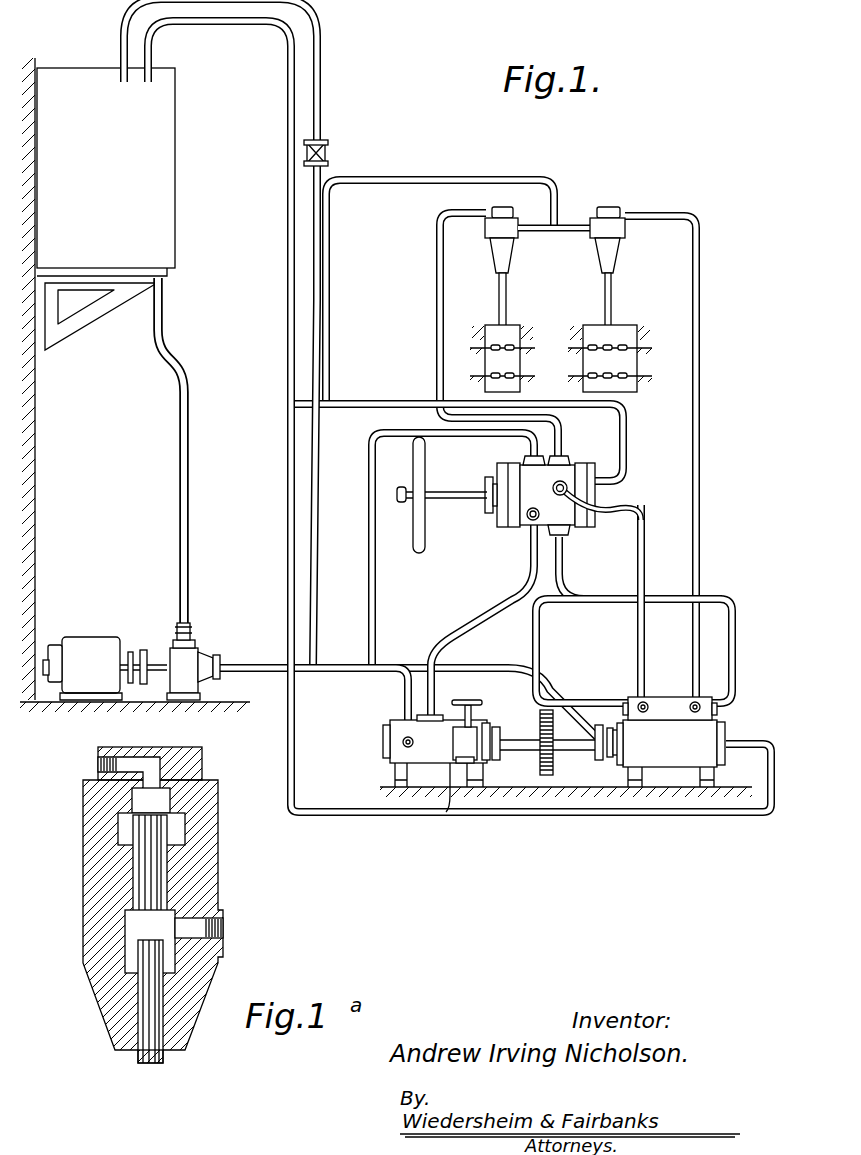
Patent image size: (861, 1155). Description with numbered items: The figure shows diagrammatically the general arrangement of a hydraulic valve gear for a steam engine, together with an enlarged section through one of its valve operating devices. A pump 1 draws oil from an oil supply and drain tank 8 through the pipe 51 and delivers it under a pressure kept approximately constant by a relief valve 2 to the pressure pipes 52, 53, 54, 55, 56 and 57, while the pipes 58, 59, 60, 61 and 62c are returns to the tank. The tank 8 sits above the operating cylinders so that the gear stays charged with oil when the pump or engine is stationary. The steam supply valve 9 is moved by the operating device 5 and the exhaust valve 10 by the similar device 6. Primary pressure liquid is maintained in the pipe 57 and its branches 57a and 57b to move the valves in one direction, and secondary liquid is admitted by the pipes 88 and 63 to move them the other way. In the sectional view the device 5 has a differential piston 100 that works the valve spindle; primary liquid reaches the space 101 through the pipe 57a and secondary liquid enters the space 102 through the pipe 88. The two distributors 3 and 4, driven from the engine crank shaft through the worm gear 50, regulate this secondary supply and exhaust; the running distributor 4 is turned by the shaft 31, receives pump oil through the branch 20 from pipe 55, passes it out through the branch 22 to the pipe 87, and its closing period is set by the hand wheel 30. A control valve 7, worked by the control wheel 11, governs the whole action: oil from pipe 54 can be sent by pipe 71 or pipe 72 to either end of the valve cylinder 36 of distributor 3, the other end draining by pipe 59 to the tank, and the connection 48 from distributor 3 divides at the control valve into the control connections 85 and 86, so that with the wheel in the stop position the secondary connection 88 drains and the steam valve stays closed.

In FIG. 1, the pump 1 is at (193, 661).
In FIG. 1, the relief valve 2 is at (328, 149).
In FIG. 1, the distributor 3 is at (660, 742).
In FIG. 1, the running distributor 4 is at (441, 753).
In FIG. 1, the valve operating device 5 is at (498, 254).
In FIG. 1A, the valve operating device 5 is at (140, 898).
In FIG. 1, the valve operating device 6 is at (612, 256).
In FIG. 1, the control valve 7 is at (540, 495).
In FIG. 1, the oil supply and drain tank 8 is at (98, 379).
In FIG. 1, the steam supply valve 9 is at (493, 360).
In FIG. 1, the exhaust valve 10 is at (628, 360).
In FIG. 1, the control wheel 11 is at (424, 467).
In FIG. 1, the branch 20 is at (400, 742).
In FIG. 1, the branch 22 is at (432, 716).
In FIG. 1, the hand wheel 30 is at (474, 705).
In FIG. 1, the shaft 31 is at (588, 746).
In FIG. 1, the valve cylinder 36 is at (672, 700).
In FIG. 1, the connection 48 is at (640, 698).
In FIG. 1, the worm gear 50 is at (540, 720).
In FIG. 1, the pipe 51 is at (180, 460).
In FIG. 1, the pipe 52 is at (316, 505).
In FIG. 1, the pipe 53 is at (337, 664).
In FIG. 1, the oil supply pipe 54 is at (378, 612).
In FIG. 1, the pipe 55 is at (404, 693).
In FIG. 1, the pipe 56 is at (500, 656).
In FIG. 1, the pipe 57 is at (458, 180).
In FIG. 1, the pipe branch 57a is at (534, 232).
In FIG. 1A, the pipe branch 57a is at (235, 932).
In FIG. 1, the pipe branch 57b is at (572, 222).
In FIG. 1, the return pipe 58 is at (287, 495).
In FIG. 1, the drain pipe 59 is at (370, 398).
In FIG. 1, the return pipe 60 is at (627, 817).
In FIG. 1, the return pipe 61 is at (452, 814).
In FIG. 1, the return pipe 62c is at (323, 48).
In FIG. 1, the pipe 63 is at (699, 621).
In FIG. 1, the pipe 71 is at (742, 690).
In FIG. 1, the pipe 72 is at (548, 666).
In FIG. 1, the control connection 85 is at (607, 470).
In FIG. 1, the control connection 86 is at (610, 514).
In FIG. 1, the pipe 87 is at (498, 610).
In FIG. 1, the pipe 88 is at (437, 292).
In FIG. 1A, the pipe 88 is at (92, 766).
In FIG. 1A, the differential piston 100 is at (218, 867).
In FIG. 1A, the space 101 is at (96, 996).
In FIG. 1A, the space 102 is at (125, 832).